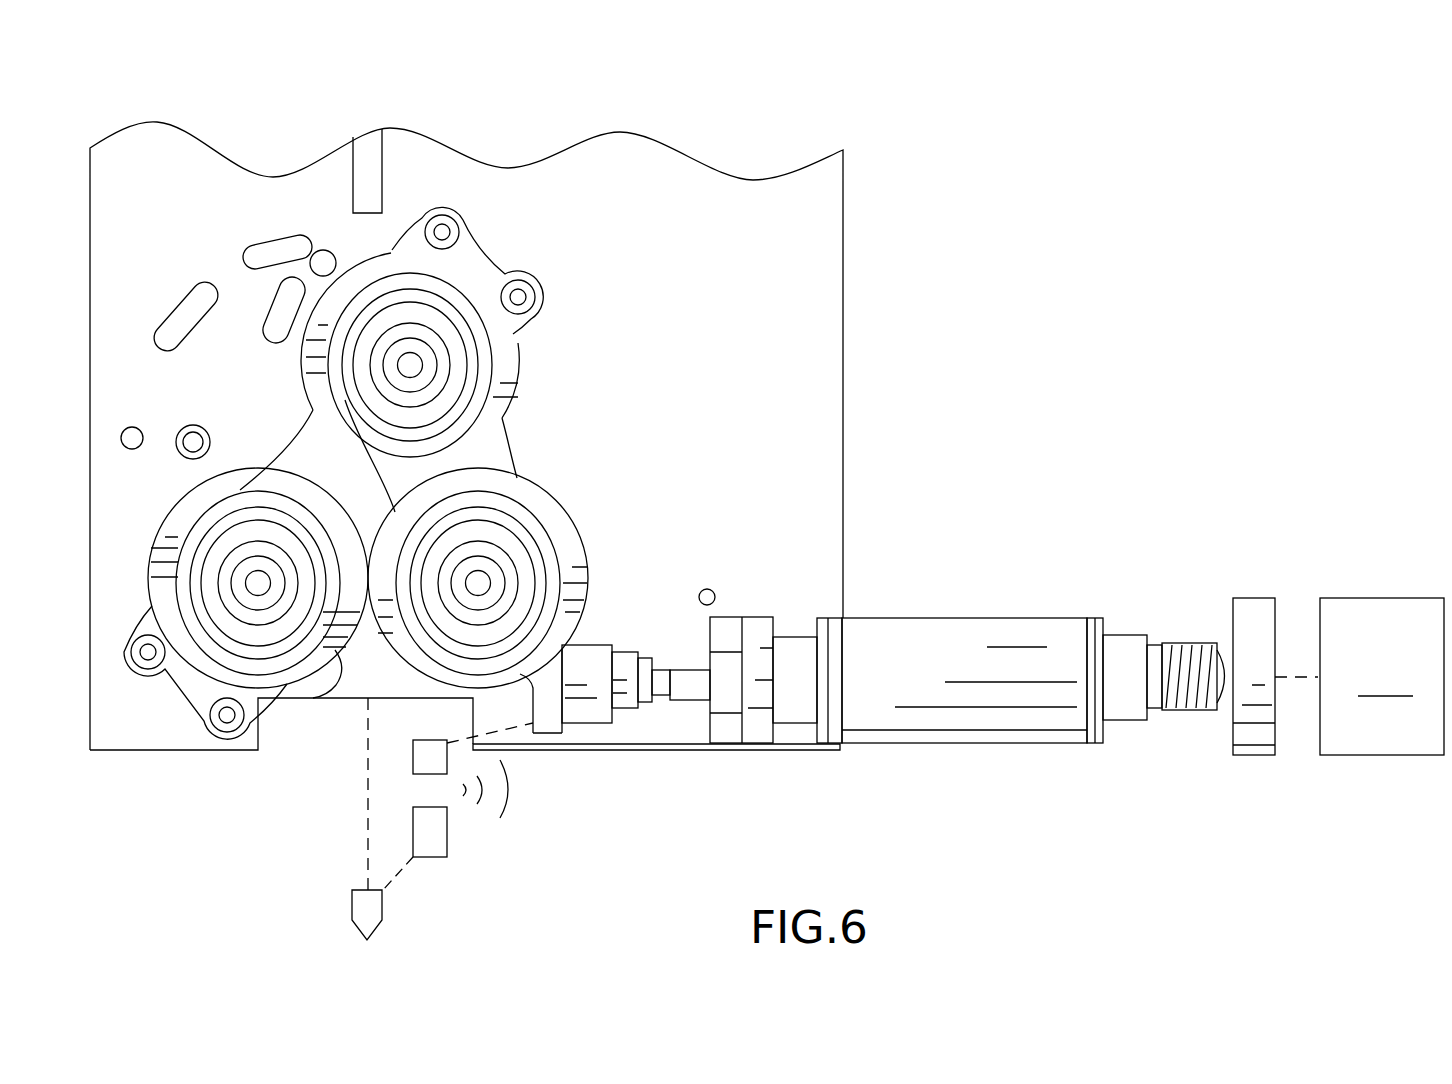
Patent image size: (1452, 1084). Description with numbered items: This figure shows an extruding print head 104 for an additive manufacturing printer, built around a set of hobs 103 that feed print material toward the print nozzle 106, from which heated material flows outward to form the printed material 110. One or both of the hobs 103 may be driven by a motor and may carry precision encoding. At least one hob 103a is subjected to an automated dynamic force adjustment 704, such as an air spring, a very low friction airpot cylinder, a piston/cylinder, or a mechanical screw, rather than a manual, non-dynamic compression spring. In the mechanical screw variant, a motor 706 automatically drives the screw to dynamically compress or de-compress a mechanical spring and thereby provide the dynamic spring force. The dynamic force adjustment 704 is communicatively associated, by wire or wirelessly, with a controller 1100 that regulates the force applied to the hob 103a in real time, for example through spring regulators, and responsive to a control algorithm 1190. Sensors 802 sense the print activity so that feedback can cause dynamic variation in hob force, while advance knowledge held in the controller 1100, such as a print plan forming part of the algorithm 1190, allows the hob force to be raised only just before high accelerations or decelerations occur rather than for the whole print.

The print head 104 is at (991, 280).
The printed material 110 is at (382, 150).
The hobs 103 is at (518, 362).
The hob 103a is at (563, 513).
The dynamic force adjustment 704 is at (912, 618).
The motor 706 is at (1250, 598).
The controller 1100 is at (1382, 608).
The control algorithm 1190 is at (1385, 679).
The sensors 802 is at (413, 762).
The print nozzle 106 is at (383, 908).